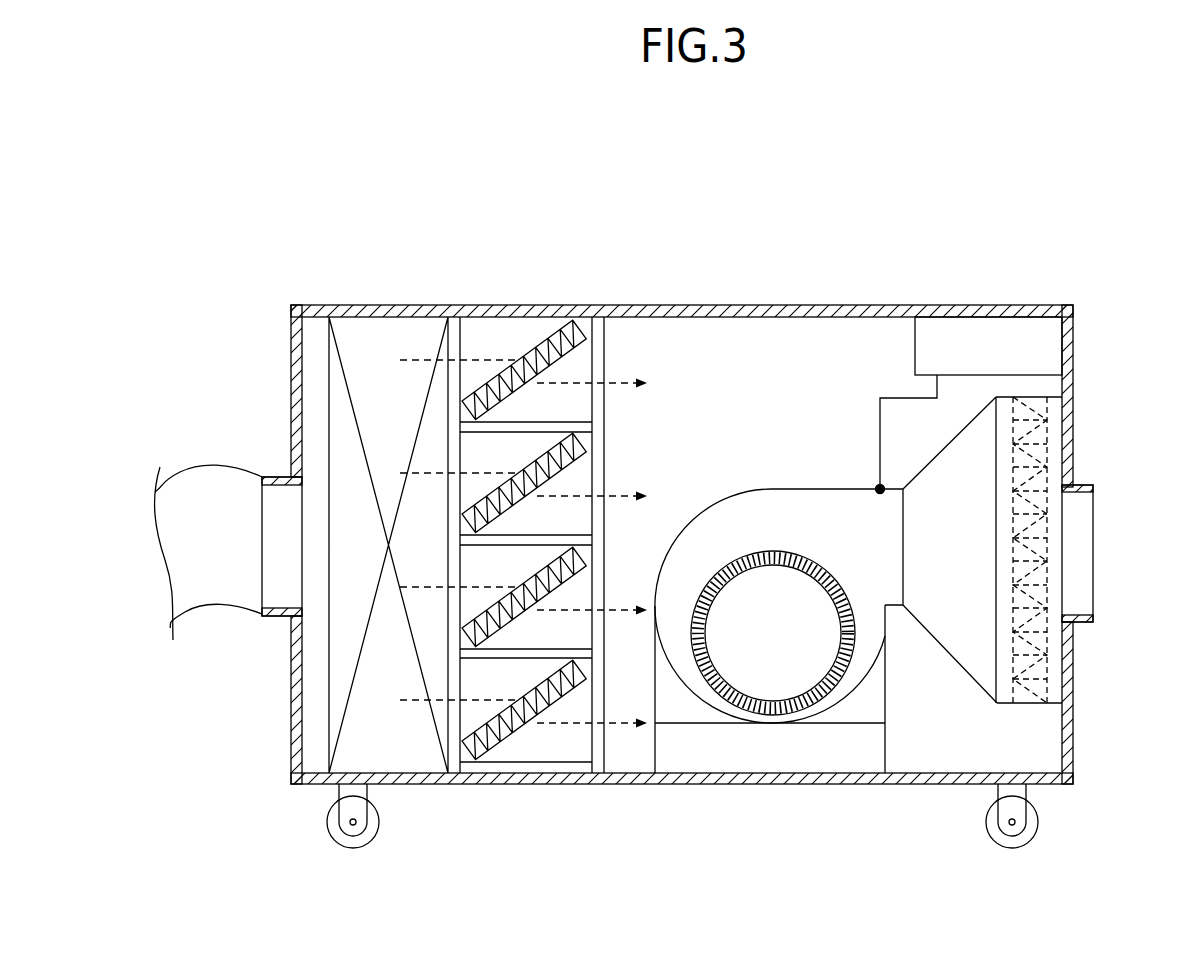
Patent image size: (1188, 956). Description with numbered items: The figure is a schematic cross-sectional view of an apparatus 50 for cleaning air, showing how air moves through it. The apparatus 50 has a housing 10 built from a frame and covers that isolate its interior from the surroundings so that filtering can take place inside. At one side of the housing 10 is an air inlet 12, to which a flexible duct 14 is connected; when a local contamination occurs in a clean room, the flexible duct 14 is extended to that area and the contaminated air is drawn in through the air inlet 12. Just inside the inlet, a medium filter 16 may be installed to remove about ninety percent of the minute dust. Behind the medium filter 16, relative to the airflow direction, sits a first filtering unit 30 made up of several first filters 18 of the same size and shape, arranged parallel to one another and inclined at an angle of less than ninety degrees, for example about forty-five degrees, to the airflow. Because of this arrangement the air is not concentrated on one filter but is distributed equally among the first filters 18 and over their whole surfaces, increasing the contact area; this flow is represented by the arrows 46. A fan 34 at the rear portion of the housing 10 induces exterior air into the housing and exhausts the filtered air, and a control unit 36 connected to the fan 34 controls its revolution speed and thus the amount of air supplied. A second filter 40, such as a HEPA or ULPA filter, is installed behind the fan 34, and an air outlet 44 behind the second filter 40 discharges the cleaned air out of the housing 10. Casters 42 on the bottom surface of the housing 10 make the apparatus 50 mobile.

The housing 10 is at (371, 310).
The air inlet 12 is at (277, 476).
The flexible duct 14 is at (218, 597).
The medium filter 16 is at (316, 345).
The first filters 18 is at (518, 735).
The first filtering unit 30 is at (496, 543).
The fan 34 is at (968, 650).
The control unit 36 is at (915, 348).
The second filter 40 is at (1045, 665).
The casters 42 is at (330, 826).
The air outlet 44 is at (1085, 482).
The arrows 46 is at (621, 740).
The apparatus for cleaning air 50 is at (729, 227).